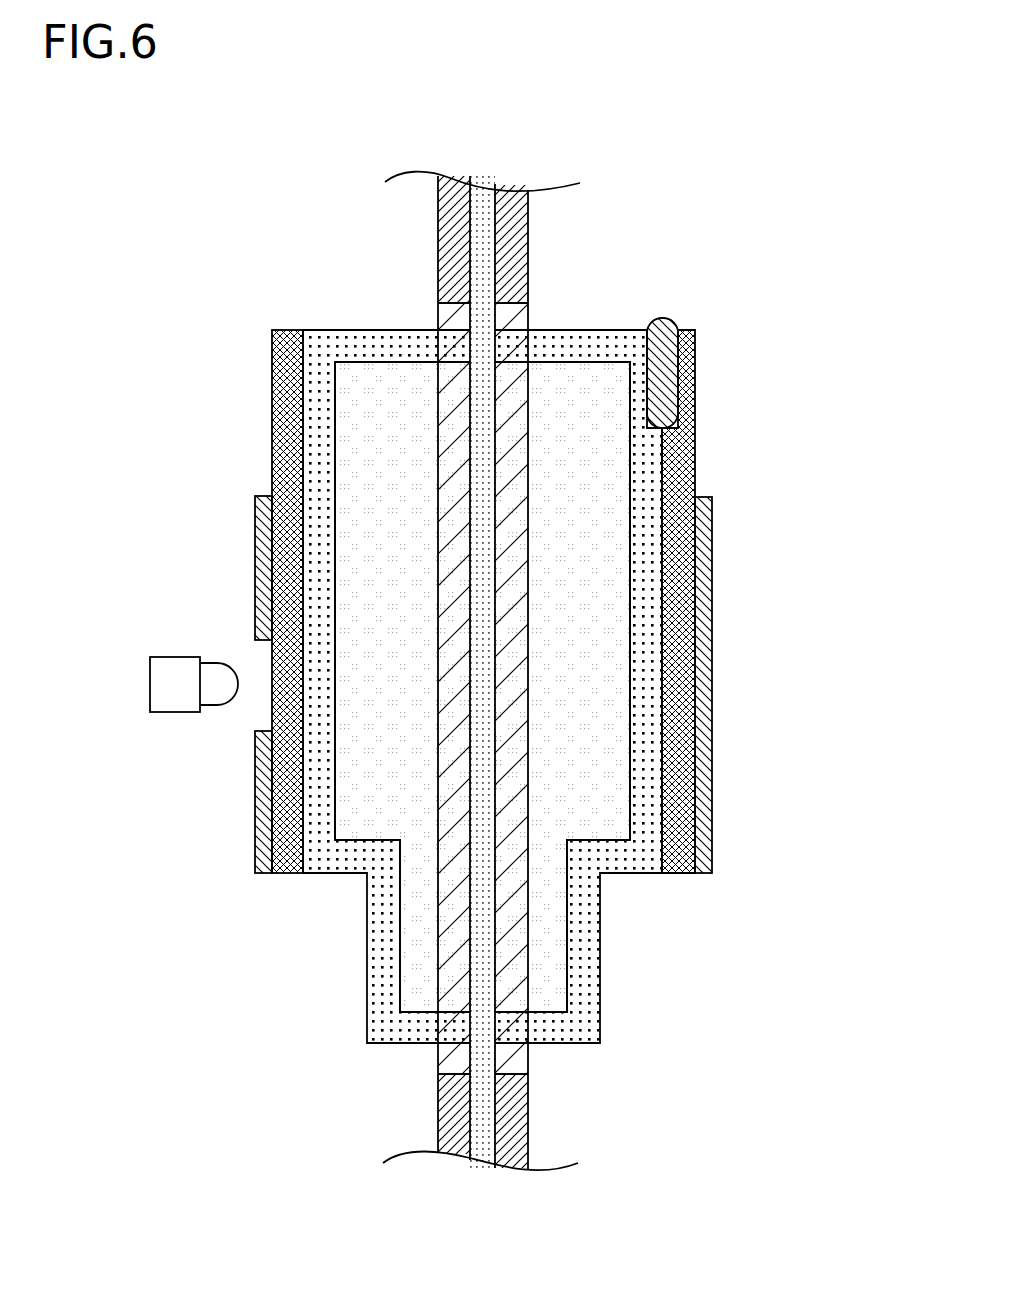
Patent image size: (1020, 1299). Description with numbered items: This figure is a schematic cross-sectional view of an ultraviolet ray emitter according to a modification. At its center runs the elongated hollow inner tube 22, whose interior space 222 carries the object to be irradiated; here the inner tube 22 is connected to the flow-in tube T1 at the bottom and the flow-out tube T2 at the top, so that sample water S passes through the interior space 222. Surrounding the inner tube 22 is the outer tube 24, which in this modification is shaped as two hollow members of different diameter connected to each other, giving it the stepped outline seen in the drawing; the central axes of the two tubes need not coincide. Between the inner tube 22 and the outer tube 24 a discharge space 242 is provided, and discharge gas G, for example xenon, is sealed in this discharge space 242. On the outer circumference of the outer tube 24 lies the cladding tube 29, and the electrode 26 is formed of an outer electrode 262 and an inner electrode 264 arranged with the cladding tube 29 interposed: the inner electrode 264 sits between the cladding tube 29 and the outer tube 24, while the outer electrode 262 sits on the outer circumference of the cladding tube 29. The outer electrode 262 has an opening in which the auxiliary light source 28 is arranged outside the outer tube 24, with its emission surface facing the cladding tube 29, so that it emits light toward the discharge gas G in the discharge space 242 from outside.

The inner tube 22 is at (592, 671).
The interior space 222 is at (487, 633).
The outer tube 24 is at (392, 1045).
The discharge space 242 is at (590, 788).
The electrode 26 is at (413, 557).
The outer electrode 262 is at (255, 843).
The inner electrode 264 is at (662, 318).
The auxiliary light source 28 is at (178, 717).
The cladding tube 29 is at (287, 876).
The discharge gas G is at (603, 445).
The sample water S is at (483, 700).
The tube T1 is at (528, 1117).
The tube T2 is at (528, 225).